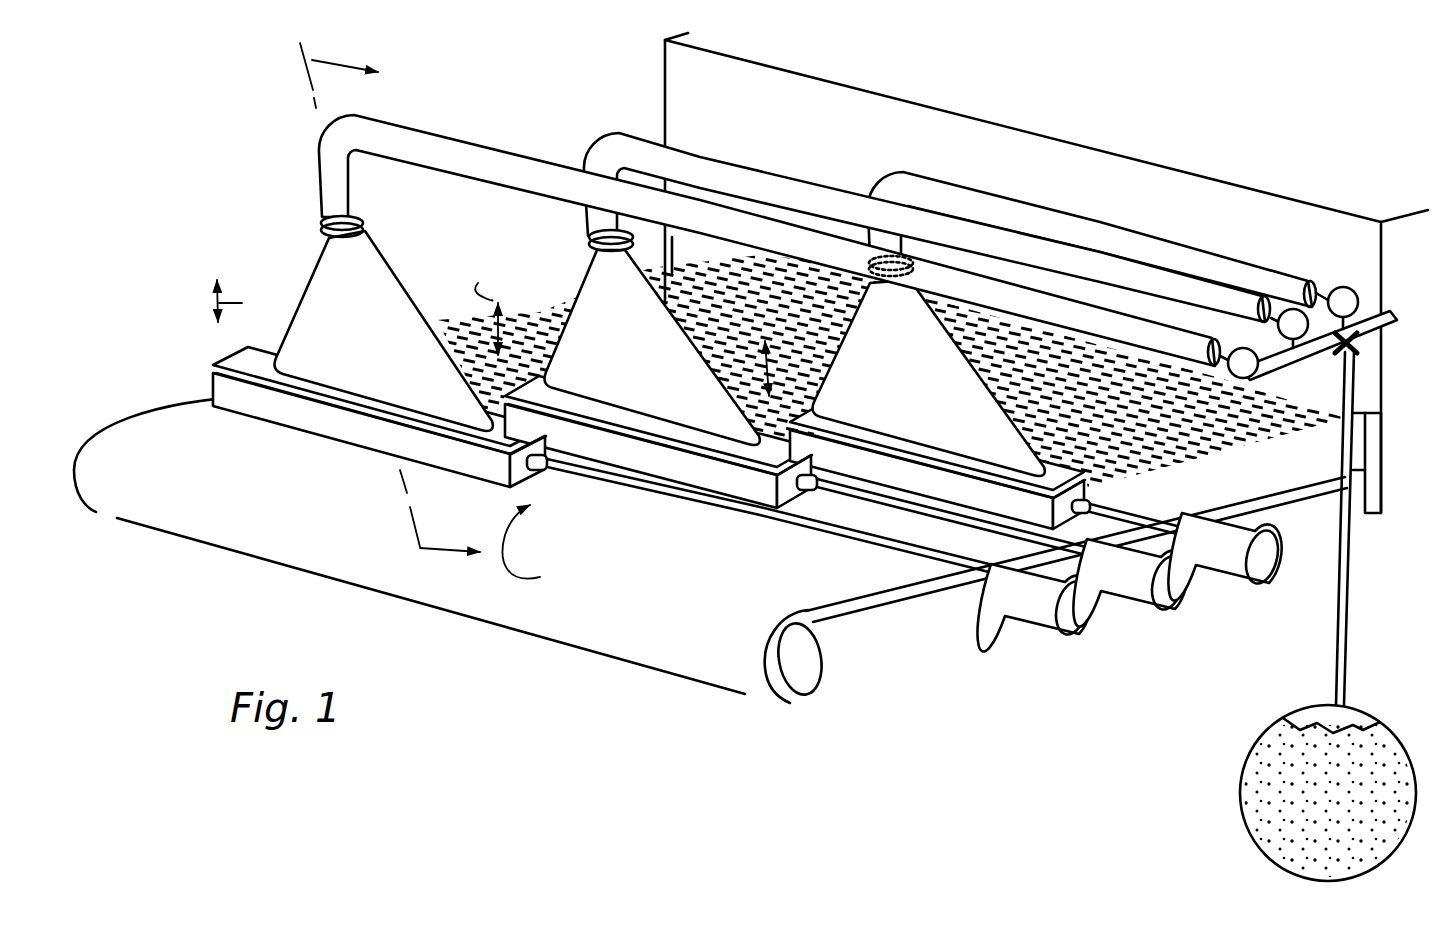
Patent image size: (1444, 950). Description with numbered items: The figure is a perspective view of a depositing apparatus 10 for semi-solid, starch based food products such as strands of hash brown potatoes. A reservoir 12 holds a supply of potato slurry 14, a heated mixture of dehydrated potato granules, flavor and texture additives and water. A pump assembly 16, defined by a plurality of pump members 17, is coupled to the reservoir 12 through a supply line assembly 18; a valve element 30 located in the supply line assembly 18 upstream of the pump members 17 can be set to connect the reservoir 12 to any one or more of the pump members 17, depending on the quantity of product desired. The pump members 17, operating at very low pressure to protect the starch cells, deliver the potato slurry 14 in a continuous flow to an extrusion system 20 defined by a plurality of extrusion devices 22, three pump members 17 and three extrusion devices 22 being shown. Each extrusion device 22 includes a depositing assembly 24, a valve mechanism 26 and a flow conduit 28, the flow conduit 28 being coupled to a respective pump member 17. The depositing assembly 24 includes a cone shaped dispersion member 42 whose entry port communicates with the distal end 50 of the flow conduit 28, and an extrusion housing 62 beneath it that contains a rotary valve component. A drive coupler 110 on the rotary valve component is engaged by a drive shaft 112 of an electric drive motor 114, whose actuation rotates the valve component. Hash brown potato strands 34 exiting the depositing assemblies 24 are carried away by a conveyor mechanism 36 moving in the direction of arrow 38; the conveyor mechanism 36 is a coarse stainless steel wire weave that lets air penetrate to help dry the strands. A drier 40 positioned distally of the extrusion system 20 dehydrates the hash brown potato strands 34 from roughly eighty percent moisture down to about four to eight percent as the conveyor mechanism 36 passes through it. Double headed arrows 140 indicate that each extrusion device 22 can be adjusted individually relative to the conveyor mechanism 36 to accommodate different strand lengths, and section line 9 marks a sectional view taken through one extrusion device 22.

The section line 9- 9 is at (402, 306).
The depositing apparatus 10 is at (545, 66).
The reservoir 12 is at (1294, 780).
The potato slurry 14 is at (1283, 815).
The pump assembly 16 is at (1367, 298).
The pump members 17 is at (1337, 288).
The supply line assembly 18 is at (1356, 586).
The extrusion system 20 is at (245, 236).
The extrusion devices 22 is at (649, 455).
The depositing assembly 24 is at (701, 320).
The valve mechanism 26 is at (1105, 599).
The flow conduit 28 is at (476, 148).
The valve element 30 is at (1368, 344).
The hash brown potato strands 34 is at (1170, 460).
The conveyor mechanism 36 is at (823, 580).
The arrow 38 is at (542, 550).
The drier 40 is at (1354, 240).
The dispersion member 42 is at (390, 294).
The distal end 50 is at (364, 224).
The extrusion housing 62 is at (390, 432).
The drive coupler 110 is at (536, 470).
The drive shaft 112 is at (745, 519).
The electric drive motor 114 is at (1048, 610).
The double headed arrows 140 is at (855, 362).